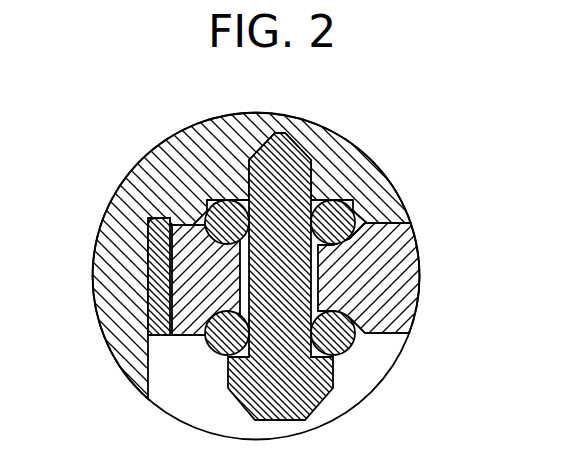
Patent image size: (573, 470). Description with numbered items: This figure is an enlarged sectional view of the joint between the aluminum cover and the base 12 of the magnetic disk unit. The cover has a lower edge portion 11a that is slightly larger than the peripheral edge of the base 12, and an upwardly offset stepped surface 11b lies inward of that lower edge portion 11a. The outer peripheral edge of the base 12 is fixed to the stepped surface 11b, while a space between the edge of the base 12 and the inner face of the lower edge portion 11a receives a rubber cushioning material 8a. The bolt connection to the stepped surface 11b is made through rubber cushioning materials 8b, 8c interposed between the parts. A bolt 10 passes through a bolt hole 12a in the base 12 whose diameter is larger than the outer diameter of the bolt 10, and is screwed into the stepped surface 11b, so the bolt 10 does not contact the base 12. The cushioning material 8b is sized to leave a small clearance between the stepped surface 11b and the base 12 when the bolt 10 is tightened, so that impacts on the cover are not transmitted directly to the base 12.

The cushioning material 8a is at (148, 298).
The rubber cushioning material 8b is at (330, 215).
The rubber cushioning material 8c is at (352, 344).
The bolt 10 is at (242, 392).
The lower edge portion 11a is at (141, 174).
The stepped surface 11b is at (382, 223).
The base 12 is at (390, 288).
The bolt hole 12a is at (340, 270).